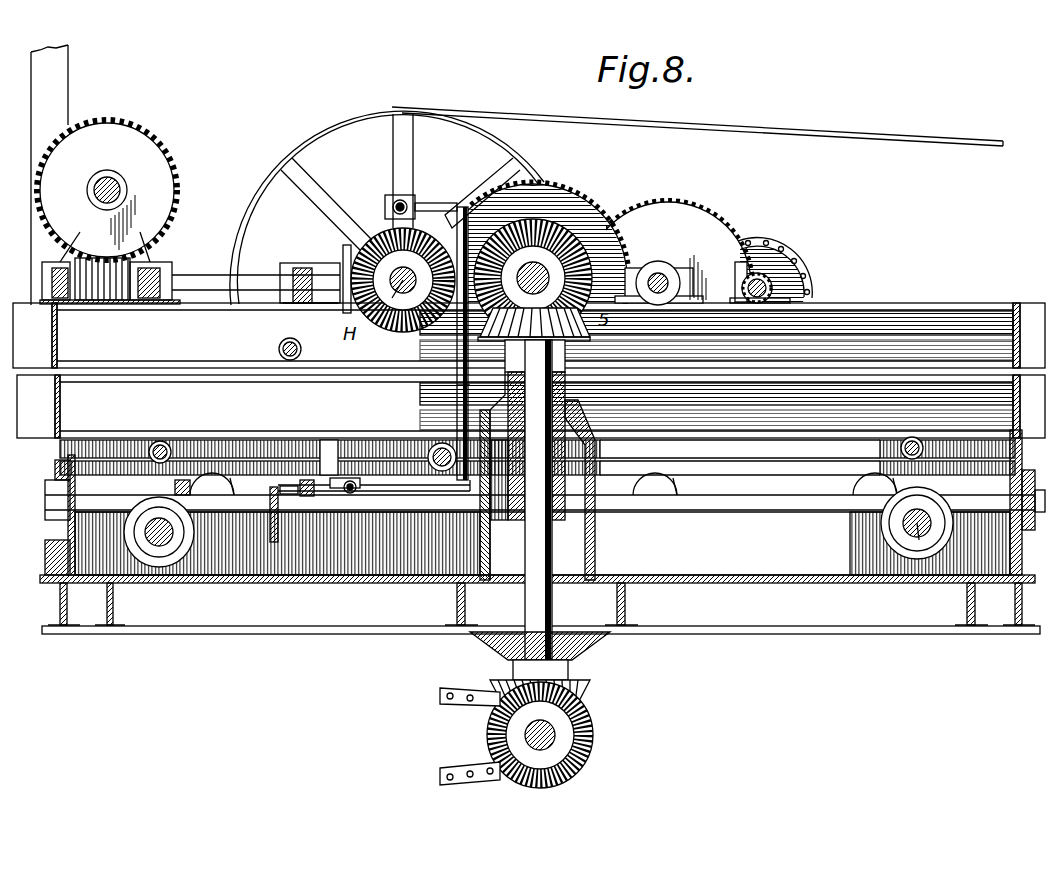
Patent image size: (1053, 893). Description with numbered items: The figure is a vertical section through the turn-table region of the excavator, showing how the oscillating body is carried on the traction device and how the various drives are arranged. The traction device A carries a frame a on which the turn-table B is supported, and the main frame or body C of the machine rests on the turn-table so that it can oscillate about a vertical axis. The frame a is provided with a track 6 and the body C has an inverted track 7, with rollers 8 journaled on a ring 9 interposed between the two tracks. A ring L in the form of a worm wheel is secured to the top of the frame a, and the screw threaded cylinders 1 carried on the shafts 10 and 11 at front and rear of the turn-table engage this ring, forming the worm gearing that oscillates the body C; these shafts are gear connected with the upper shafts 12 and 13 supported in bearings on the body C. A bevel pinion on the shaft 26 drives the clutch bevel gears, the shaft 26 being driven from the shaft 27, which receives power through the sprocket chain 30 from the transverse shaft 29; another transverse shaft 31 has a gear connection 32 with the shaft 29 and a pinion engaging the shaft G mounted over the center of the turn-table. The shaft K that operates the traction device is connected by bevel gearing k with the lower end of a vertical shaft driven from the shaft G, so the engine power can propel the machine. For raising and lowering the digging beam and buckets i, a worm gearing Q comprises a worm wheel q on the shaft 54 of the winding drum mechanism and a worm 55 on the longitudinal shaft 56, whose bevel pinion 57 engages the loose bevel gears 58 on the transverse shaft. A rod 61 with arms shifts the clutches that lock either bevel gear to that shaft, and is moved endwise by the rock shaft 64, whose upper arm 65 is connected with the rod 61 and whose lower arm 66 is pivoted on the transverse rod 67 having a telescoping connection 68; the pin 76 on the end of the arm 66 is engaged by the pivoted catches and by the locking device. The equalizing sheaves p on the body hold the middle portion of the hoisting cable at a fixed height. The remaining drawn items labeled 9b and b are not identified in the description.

The screw threaded cylinders 1 is at (697, 116).
The track 6 is at (52, 545).
The inverted track 7 is at (55, 470).
The rollers 8 is at (50, 492).
The ring 9 is at (462, 122).
The rod 9b is at (1000, 508).
The shaft 10 is at (922, 545).
The shaft 11 is at (158, 546).
The upper shaft 12 is at (162, 450).
The upper shaft 13 is at (912, 446).
The shaft 26 is at (442, 448).
The shaft 27 is at (279, 349).
The transverse shaft 29 is at (758, 300).
The sprocket chain 30 is at (808, 290).
The transverse shaft 31 is at (660, 282).
The gear connection 32 is at (757, 272).
The shaft 54 is at (108, 190).
The worm 55 is at (120, 300).
The longitudinal shaft 56 is at (222, 300).
The bevel pinion 57 is at (352, 252).
The bevel gears 58 is at (393, 316).
The rod 61 is at (385, 207).
The rock shaft 64 is at (458, 392).
The arm 65 is at (461, 210).
The arm 66 is at (468, 487).
The rod 67 is at (292, 494).
The telescoping connection 68 is at (346, 494).
The pin 76 is at (331, 465).
The frame a is at (283, 628).
The traction device A is at (550, 576).
The cam b is at (662, 484).
The turn-table B is at (1033, 500).
The main frame or body C is at (858, 322).
The shaft G is at (533, 280).
The digging buckets i is at (165, 548).
The bevel gearing k is at (576, 700).
The shaft K is at (556, 740).
The ring L is at (206, 578).
The sheaves p is at (560, 206).
The worm wheel q is at (165, 178).
The worm gearing Q is at (143, 228).